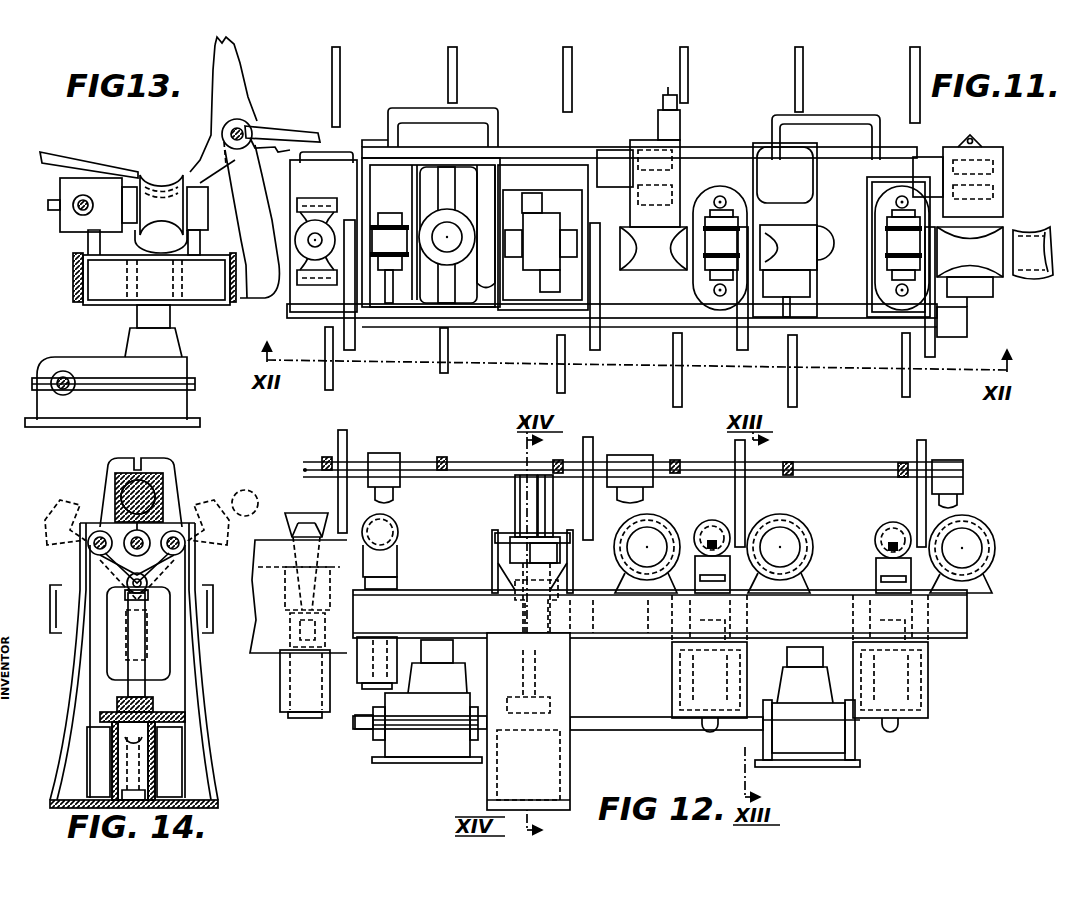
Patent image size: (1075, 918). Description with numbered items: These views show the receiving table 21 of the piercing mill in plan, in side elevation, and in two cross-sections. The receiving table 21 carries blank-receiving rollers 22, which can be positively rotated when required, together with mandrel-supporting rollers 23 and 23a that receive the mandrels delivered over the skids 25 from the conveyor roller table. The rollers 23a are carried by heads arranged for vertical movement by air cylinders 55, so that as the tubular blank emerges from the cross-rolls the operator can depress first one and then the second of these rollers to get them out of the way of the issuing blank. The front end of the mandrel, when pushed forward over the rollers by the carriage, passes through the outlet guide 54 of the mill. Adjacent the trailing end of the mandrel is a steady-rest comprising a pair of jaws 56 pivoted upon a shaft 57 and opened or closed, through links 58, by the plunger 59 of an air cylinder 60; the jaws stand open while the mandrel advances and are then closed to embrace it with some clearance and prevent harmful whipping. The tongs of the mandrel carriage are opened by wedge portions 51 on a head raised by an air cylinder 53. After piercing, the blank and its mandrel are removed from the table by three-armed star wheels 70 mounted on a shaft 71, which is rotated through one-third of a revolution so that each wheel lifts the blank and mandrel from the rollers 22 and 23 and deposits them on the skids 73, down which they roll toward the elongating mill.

In FIG. 13, the receiving table 21 is at (221, 285).
In FIG. 11, the receiving table 21 is at (582, 153).
In FIG. 12, the receiving table 21 is at (422, 610).
In FIG. 14, the receiving table 21 is at (213, 612).
In FIG. 13, the blank-receiving rollers 22 is at (170, 188).
In FIG. 11, the blank-receiving rollers 22 is at (665, 265).
In FIG. 12, the blank-receiving rollers 22 is at (633, 530).
In FIG. 11, the mandrel-supporting roller 23 is at (395, 237).
In FIG. 12, the mandrel-supporting roller 23 is at (395, 521).
In FIG. 11, the mandrel-supporting roller 23a is at (722, 244).
In FIG. 12, the mandrel-supporting roller 23a is at (716, 528).
In FIG. 13, the skids 25 is at (46, 156).
In FIG. 11, the skids 25 is at (338, 81).
In FIG. 11, the wedge portions 51 is at (327, 200).
In FIG. 12, the wedge portions 51 is at (300, 530).
In FIG. 12, the air cylinder 53 is at (307, 673).
In FIG. 11, the outlet guide 54 is at (1040, 240).
In FIG. 12, the air cylinders 55 is at (707, 697).
In FIG. 11, the jaws 56 is at (540, 223).
In FIG. 12, the jaws 56 is at (527, 497).
In FIG. 14, the jaws 56 is at (105, 503).
In FIG. 14, the shaft 57 is at (98, 554).
In FIG. 14, the links 58 is at (160, 565).
In FIG. 14, the plunger 59 is at (137, 687).
In FIG. 12, the air cylinder 60 is at (533, 782).
In FIG. 14, the air cylinder 60 is at (138, 766).
In FIG. 13, the star wheels 70 is at (229, 93).
In FIG. 11, the star wheels 70 is at (349, 340).
In FIG. 12, the star wheels 70 is at (346, 450).
In FIG. 13, the shaft 71 is at (245, 126).
In FIG. 11, the shaft 71 is at (427, 314).
In FIG. 12, the shaft 71 is at (455, 473).
In FIG. 13, the skids 73 is at (293, 128).
In FIG. 11, the skids 73 is at (565, 365).
In FIG. 12, the skids 73 is at (440, 460).